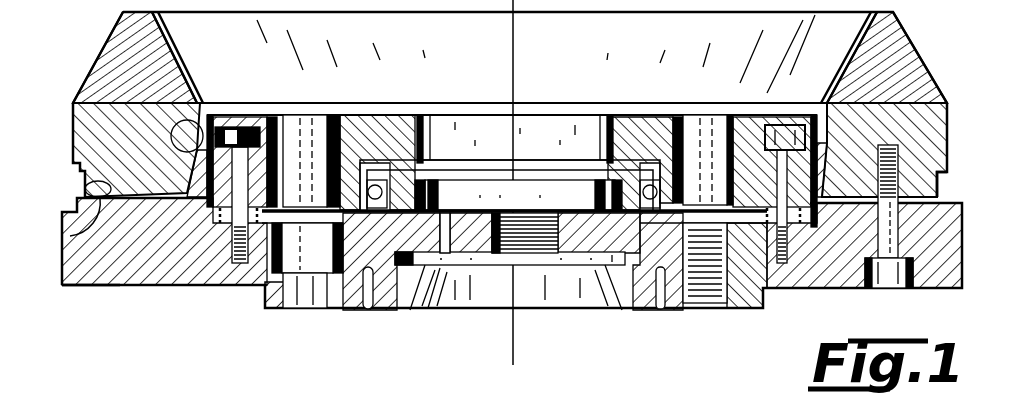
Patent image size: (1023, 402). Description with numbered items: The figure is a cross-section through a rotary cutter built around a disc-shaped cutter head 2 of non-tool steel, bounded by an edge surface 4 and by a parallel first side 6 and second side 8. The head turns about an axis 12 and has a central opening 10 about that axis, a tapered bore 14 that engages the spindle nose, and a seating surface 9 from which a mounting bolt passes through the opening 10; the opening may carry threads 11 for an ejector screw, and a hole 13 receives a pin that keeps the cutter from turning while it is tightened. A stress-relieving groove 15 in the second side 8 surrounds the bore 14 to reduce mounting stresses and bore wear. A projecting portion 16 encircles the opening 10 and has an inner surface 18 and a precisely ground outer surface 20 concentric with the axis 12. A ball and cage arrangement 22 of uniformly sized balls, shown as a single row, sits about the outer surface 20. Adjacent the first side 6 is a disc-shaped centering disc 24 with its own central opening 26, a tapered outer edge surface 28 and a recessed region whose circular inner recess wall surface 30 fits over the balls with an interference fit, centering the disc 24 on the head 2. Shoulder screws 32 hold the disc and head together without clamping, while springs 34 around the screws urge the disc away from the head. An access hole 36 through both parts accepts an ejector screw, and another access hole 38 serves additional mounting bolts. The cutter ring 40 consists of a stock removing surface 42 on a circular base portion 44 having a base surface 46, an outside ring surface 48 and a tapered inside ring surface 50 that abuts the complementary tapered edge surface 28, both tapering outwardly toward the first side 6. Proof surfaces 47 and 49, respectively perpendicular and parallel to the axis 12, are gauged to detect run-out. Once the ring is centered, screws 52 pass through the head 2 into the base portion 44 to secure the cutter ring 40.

The cutter head 2 is at (83, 280).
The edge surface 4 is at (62, 265).
The first side 6 is at (62, 235).
The second side 8 is at (345, 310).
The seating surface 9 is at (450, 210).
The central opening 10 is at (492, 310).
The threads 11 is at (570, 310).
The axis 12 is at (517, 48).
The hole 13 is at (455, 310).
The tapered bore 14 is at (417, 310).
The stress-relieving groove 15 is at (367, 310).
The projecting portion 16 is at (596, 198).
The inner surface 18 is at (593, 180).
The outer surface 20 is at (430, 170).
The ball and cage arrangement 22 is at (657, 190).
The centering disc 24 is at (373, 123).
The central opening 26 is at (538, 130).
The tapered outer edge surface 28 is at (235, 127).
The circular inner recess wall surface 30 is at (690, 117).
The shoulder screws 32 is at (240, 130).
The springs 34 is at (747, 327).
The access hole 36 is at (705, 303).
The access hole 38 is at (300, 300).
The cutter ring 40 is at (950, 96).
The stock removing surface 42 is at (915, 62).
The circular base portion 44 is at (950, 136).
The base surface 46 is at (83, 186).
The proof surface 47 is at (940, 177).
The outside ring surface 48 is at (72, 138).
The proof surface 49 is at (943, 204).
The tapered inside ring surface 50 is at (200, 100).
The screw 52 is at (890, 286).